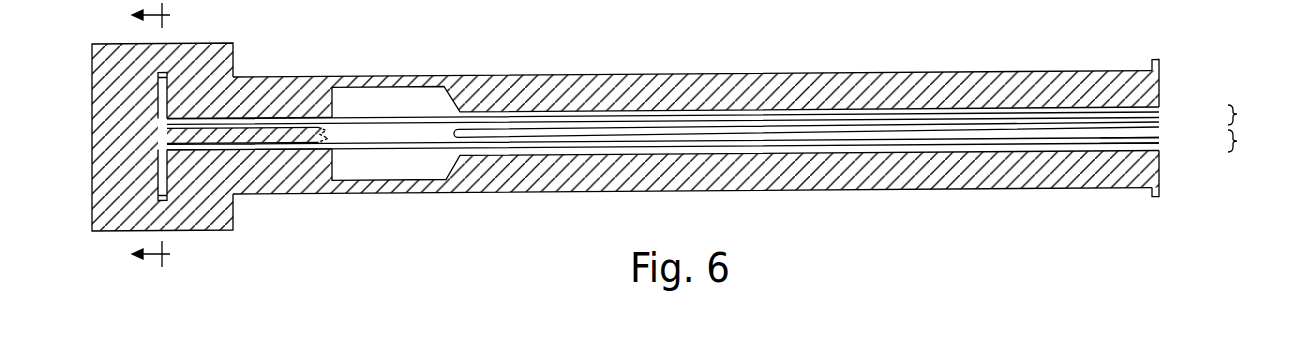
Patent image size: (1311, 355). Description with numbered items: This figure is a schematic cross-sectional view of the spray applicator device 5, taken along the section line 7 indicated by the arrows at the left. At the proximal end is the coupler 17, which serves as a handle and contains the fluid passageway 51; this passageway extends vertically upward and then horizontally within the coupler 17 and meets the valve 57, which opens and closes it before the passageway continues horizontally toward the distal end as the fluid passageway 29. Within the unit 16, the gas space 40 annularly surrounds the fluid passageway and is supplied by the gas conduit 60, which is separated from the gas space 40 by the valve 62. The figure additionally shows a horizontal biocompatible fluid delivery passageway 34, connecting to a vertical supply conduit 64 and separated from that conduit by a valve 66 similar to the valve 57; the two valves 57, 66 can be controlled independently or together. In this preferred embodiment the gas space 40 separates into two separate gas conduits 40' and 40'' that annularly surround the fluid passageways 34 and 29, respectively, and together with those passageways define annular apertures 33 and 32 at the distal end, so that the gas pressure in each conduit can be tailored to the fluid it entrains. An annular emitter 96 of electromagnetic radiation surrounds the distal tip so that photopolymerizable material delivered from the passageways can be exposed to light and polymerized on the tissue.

The catheter device 5 is at (157, 97).
The section line 7 is at (158, 135).
The unit 16 is at (357, 194).
The coupler 17 is at (112, 128).
The fluid passageway 29 is at (1160, 114).
The annular aperture 32 is at (1237, 114).
The annular aperture 33 is at (1237, 141).
The fluid delivery passageway 34 is at (1160, 141).
The gas space 40 is at (396, 107).
The gas conduit 40' is at (663, 179).
The gas conduit 40'' is at (663, 80).
The fluid passageway 51 is at (162, 71).
The valve 57 is at (227, 119).
The gas conduit 60 is at (300, 147).
The valve 62 is at (308, 128).
The vertical supply conduit 64 is at (161, 201).
The valve 66 is at (212, 146).
The emitter 96 is at (1155, 61).